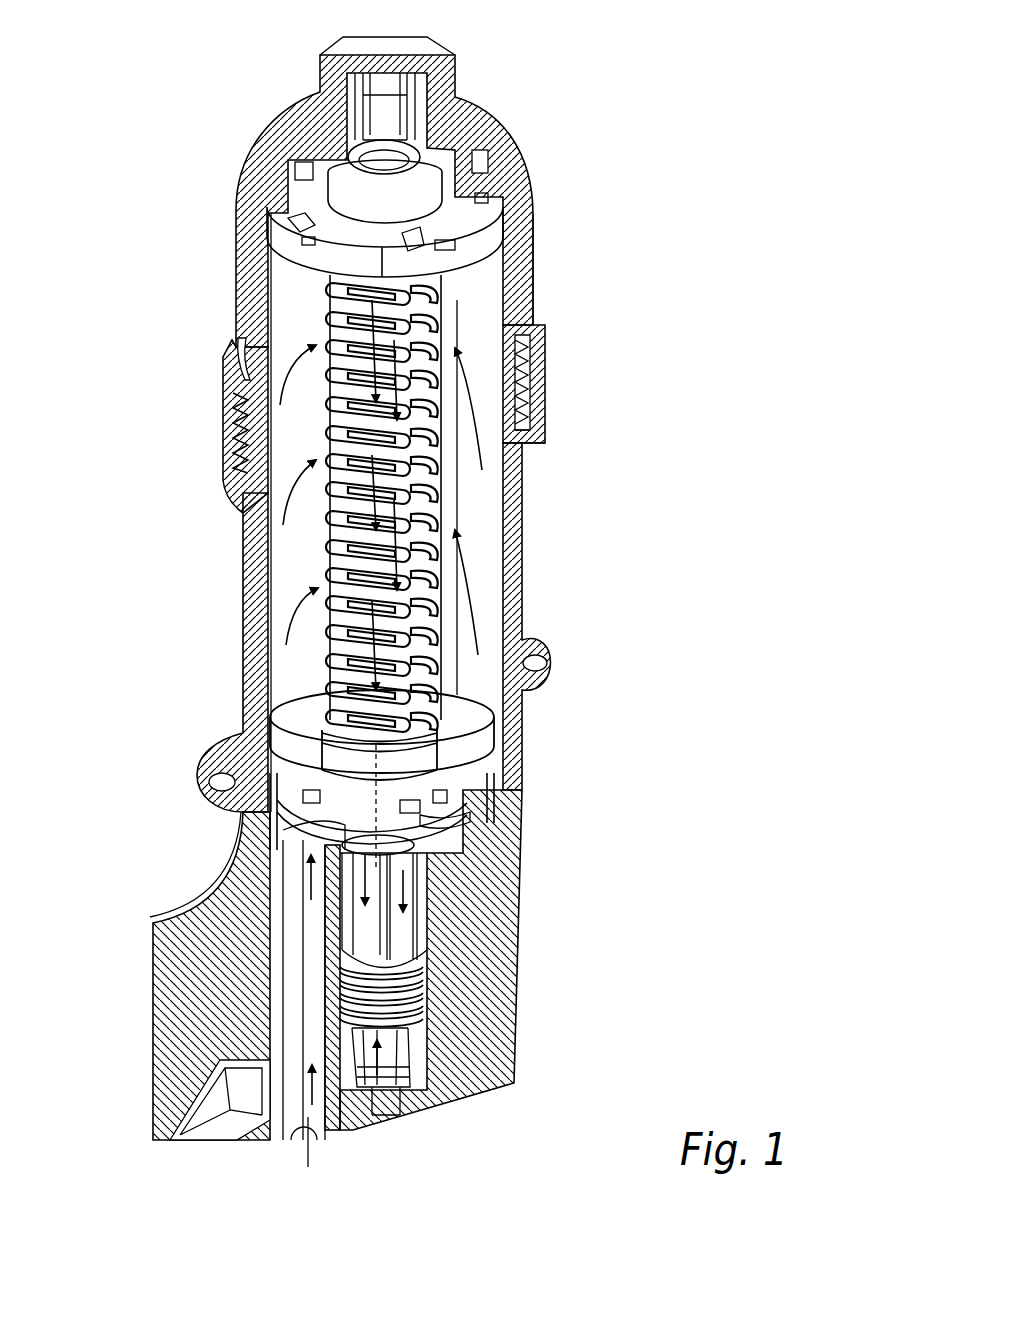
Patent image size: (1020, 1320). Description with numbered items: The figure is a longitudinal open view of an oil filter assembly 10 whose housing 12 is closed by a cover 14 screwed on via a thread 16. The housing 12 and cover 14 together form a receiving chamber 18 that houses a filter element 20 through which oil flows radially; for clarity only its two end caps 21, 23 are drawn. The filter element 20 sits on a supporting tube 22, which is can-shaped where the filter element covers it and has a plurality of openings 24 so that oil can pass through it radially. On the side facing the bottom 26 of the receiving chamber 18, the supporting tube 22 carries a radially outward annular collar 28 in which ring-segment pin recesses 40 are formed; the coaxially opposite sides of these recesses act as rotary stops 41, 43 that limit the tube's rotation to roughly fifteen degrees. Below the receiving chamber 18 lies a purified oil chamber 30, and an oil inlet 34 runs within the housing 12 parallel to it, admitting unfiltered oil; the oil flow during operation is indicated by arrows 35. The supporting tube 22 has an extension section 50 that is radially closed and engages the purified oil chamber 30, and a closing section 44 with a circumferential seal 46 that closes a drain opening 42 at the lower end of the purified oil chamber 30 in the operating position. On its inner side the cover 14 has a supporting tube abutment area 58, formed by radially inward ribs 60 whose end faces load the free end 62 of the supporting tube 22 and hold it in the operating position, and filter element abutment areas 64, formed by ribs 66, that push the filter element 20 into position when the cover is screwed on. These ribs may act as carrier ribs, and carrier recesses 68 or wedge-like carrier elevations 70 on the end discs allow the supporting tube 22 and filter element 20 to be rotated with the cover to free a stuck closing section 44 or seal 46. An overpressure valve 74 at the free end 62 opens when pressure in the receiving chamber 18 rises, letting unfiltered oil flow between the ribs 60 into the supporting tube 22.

The oil filter assembly 10 is at (585, 472).
The housing 12 is at (513, 563).
The cover 14 is at (505, 117).
The thread 16 is at (547, 412).
The receiving chamber 18 is at (485, 520).
The filter element 20 is at (458, 590).
The end cap 21 is at (483, 233).
The supporting tube 22 is at (328, 533).
The end cap 23 is at (483, 752).
The openings 24 is at (512, 390).
The bottom 26 is at (497, 777).
The annular collar 28 is at (310, 827).
The purified oil chamber 30 is at (430, 905).
The oil inlet 34 is at (303, 967).
The arrows 35 is at (505, 355).
The pin recesses 40 is at (467, 807).
The rotary stop 41 is at (463, 820).
The drain opening 42 is at (388, 1090).
The rotary stop 43 is at (337, 848).
The closing section 44 is at (413, 1080).
The circumferential seal 46 is at (417, 1083).
The extension section 50 is at (410, 884).
The supporting tube abutment area 58 is at (360, 150).
The ribs 60 is at (425, 150).
The free end 62 is at (430, 183).
The filter element abutment areas 64 is at (490, 197).
The ribs 66 is at (300, 180).
The carrier recesses 68 is at (295, 240).
The carrier elevations 70 is at (285, 225).
The overpressure valve 74 is at (433, 150).